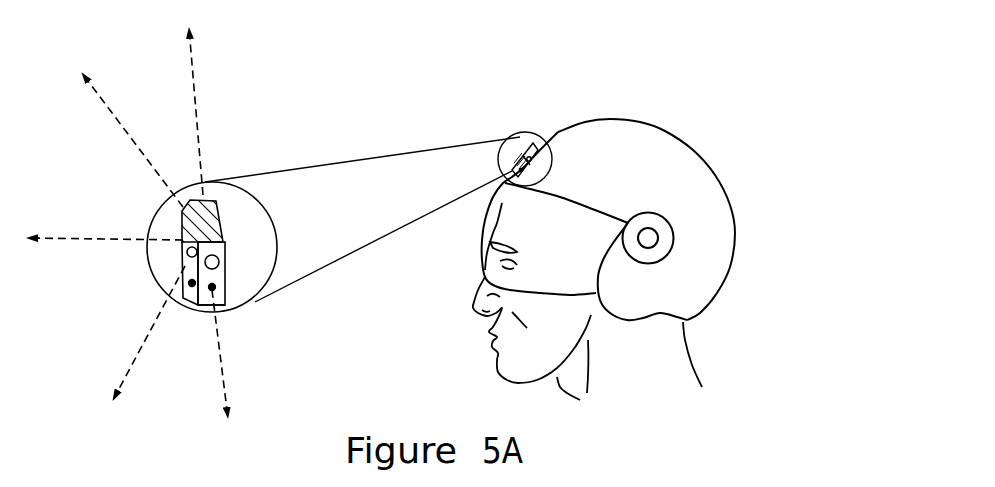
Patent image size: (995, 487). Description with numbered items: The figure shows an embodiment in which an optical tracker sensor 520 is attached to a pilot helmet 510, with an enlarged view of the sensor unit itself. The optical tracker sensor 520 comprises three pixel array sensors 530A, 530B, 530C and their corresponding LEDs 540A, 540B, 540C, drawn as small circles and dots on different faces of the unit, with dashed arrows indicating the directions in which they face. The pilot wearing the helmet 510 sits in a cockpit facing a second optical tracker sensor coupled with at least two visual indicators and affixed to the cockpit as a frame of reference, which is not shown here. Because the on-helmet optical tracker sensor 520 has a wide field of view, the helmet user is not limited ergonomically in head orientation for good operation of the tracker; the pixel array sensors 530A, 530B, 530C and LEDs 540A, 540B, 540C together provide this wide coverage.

The pilot helmet 510 is at (637, 120).
The optical tracker sensor 520 is at (216, 198).
The pixel array sensor 530A is at (219, 258).
The pixel array sensor 530B is at (187, 251).
The pixel array sensor 530C is at (183, 214).
The LED 540A is at (217, 287).
The LED 540B is at (186, 308).
The LED 540C is at (188, 270).